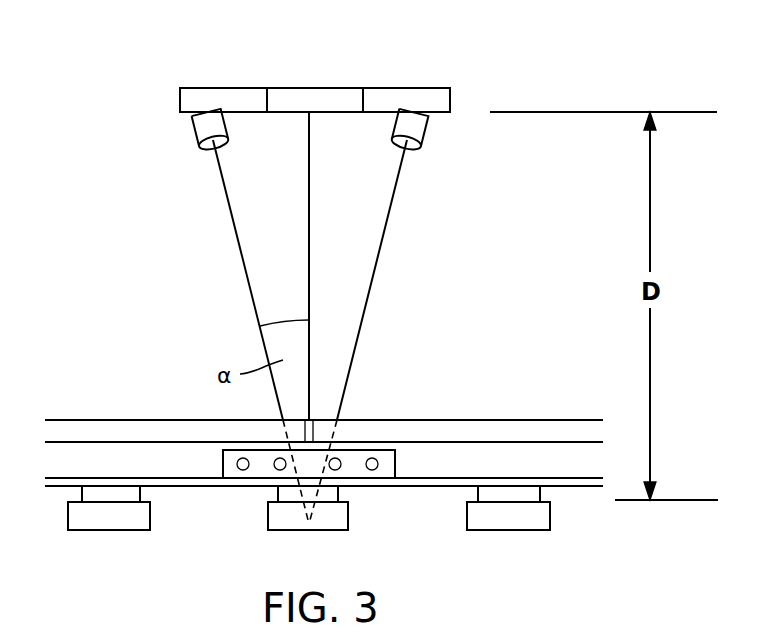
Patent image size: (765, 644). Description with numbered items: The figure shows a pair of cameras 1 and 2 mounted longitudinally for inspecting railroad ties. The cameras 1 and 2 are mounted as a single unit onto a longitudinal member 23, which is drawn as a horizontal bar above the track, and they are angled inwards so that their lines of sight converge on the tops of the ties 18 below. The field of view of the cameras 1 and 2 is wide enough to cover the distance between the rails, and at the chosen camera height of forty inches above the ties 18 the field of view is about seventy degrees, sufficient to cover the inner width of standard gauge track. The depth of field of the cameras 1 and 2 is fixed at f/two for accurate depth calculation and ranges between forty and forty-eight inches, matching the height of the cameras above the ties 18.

The longitudinal member 23 is at (233, 88).
The camera 1 is at (197, 127).
The camera 2 is at (432, 127).
The tie 18 is at (348, 512).